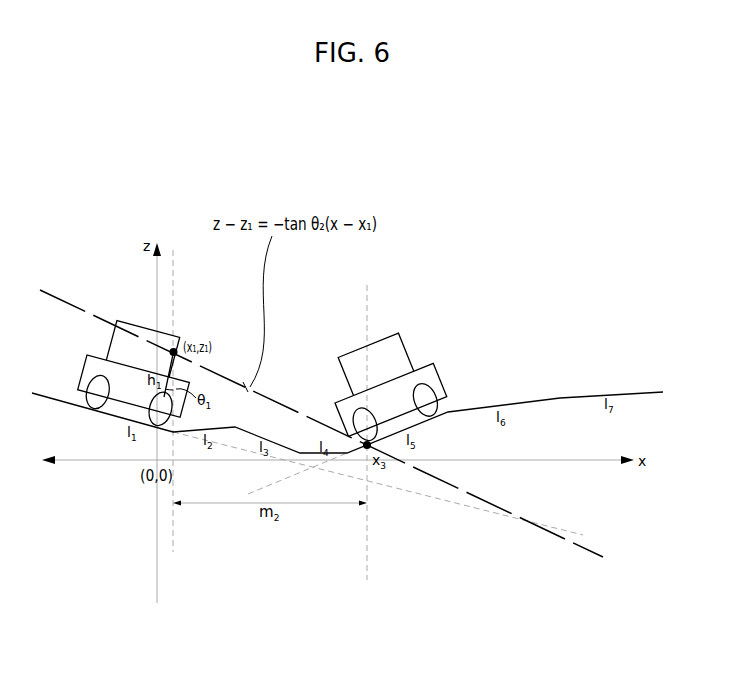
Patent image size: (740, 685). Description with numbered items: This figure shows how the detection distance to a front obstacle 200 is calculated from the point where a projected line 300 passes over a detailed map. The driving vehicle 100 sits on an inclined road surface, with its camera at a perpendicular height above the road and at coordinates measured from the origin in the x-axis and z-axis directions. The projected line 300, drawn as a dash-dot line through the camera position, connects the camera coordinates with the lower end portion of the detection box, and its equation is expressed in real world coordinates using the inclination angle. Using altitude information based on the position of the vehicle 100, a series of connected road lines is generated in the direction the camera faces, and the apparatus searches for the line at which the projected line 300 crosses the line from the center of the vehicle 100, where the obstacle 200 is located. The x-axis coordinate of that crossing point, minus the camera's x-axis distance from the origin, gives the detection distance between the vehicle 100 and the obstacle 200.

The vehicle 100 is at (130, 318).
The front obstacle 200 is at (390, 333).
The projected line 300 is at (603, 558).